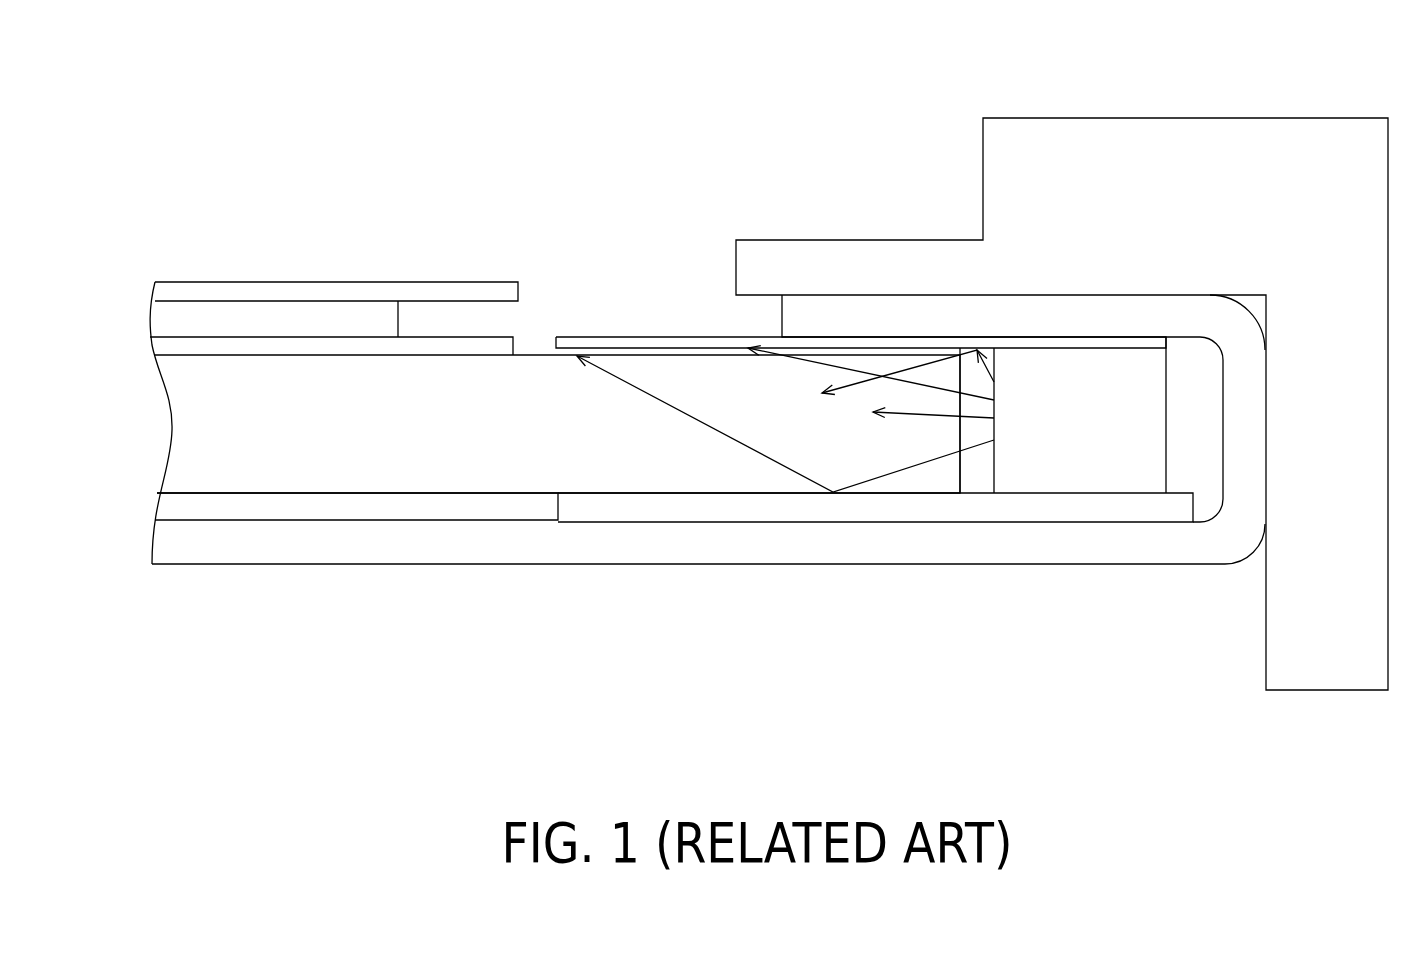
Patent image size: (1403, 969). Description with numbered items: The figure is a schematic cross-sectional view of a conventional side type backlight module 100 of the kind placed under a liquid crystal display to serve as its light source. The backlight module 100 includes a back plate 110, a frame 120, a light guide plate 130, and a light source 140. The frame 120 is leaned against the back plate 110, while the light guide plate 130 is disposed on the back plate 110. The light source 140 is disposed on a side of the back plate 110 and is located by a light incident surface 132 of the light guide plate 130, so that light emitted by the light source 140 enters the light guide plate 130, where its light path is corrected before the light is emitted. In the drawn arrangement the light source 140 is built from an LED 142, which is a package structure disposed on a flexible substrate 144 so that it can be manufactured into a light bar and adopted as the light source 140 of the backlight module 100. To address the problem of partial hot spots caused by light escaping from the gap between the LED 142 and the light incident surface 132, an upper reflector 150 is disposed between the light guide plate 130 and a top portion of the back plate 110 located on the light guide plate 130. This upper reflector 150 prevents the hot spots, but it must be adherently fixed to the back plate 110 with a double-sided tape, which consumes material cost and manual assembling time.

The side type backlight module 100 is at (1322, 776).
The back plate 110 is at (350, 552).
The frame 120 is at (1207, 132).
The light guide plate 130 is at (190, 412).
The light incident surface 132 is at (963, 460).
The light source 140 is at (875, 546).
The LED 142 is at (1092, 477).
The flexible substrate 144 is at (993, 505).
The upper reflector 150 is at (652, 342).